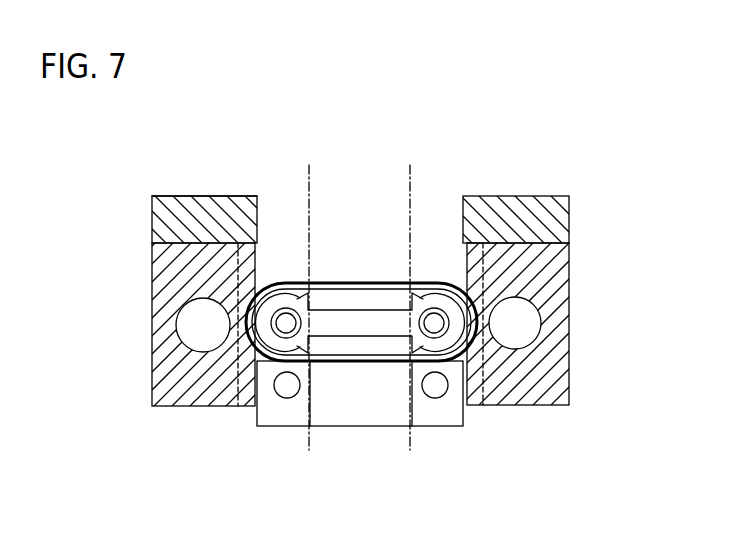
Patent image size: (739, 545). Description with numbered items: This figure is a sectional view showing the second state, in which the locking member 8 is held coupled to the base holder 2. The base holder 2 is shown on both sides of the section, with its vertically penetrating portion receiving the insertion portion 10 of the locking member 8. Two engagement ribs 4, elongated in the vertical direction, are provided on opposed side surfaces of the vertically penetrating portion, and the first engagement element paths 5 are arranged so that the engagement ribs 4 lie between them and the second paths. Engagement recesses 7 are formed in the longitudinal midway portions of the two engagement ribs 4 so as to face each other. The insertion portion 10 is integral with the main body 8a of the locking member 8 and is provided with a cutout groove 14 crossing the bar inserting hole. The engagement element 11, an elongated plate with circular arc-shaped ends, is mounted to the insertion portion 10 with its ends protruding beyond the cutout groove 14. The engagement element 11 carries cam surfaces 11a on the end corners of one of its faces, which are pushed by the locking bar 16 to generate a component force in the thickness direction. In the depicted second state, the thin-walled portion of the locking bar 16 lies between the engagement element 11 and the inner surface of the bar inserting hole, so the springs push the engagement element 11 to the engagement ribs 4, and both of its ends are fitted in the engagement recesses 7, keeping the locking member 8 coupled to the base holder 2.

The base holder 2 is at (150, 338).
The engagement ribs 4 is at (244, 404).
The first engagement element paths 5 is at (236, 216).
The engagement recesses 7 is at (253, 377).
The locking member 8 is at (150, 218).
The main body 8a is at (178, 212).
The insertion portion 10 is at (287, 416).
The engagement element 11 is at (361, 368).
The cam surfaces 11a is at (388, 343).
The cutout groove 14 is at (272, 303).
The locking bar 16 is at (413, 209).